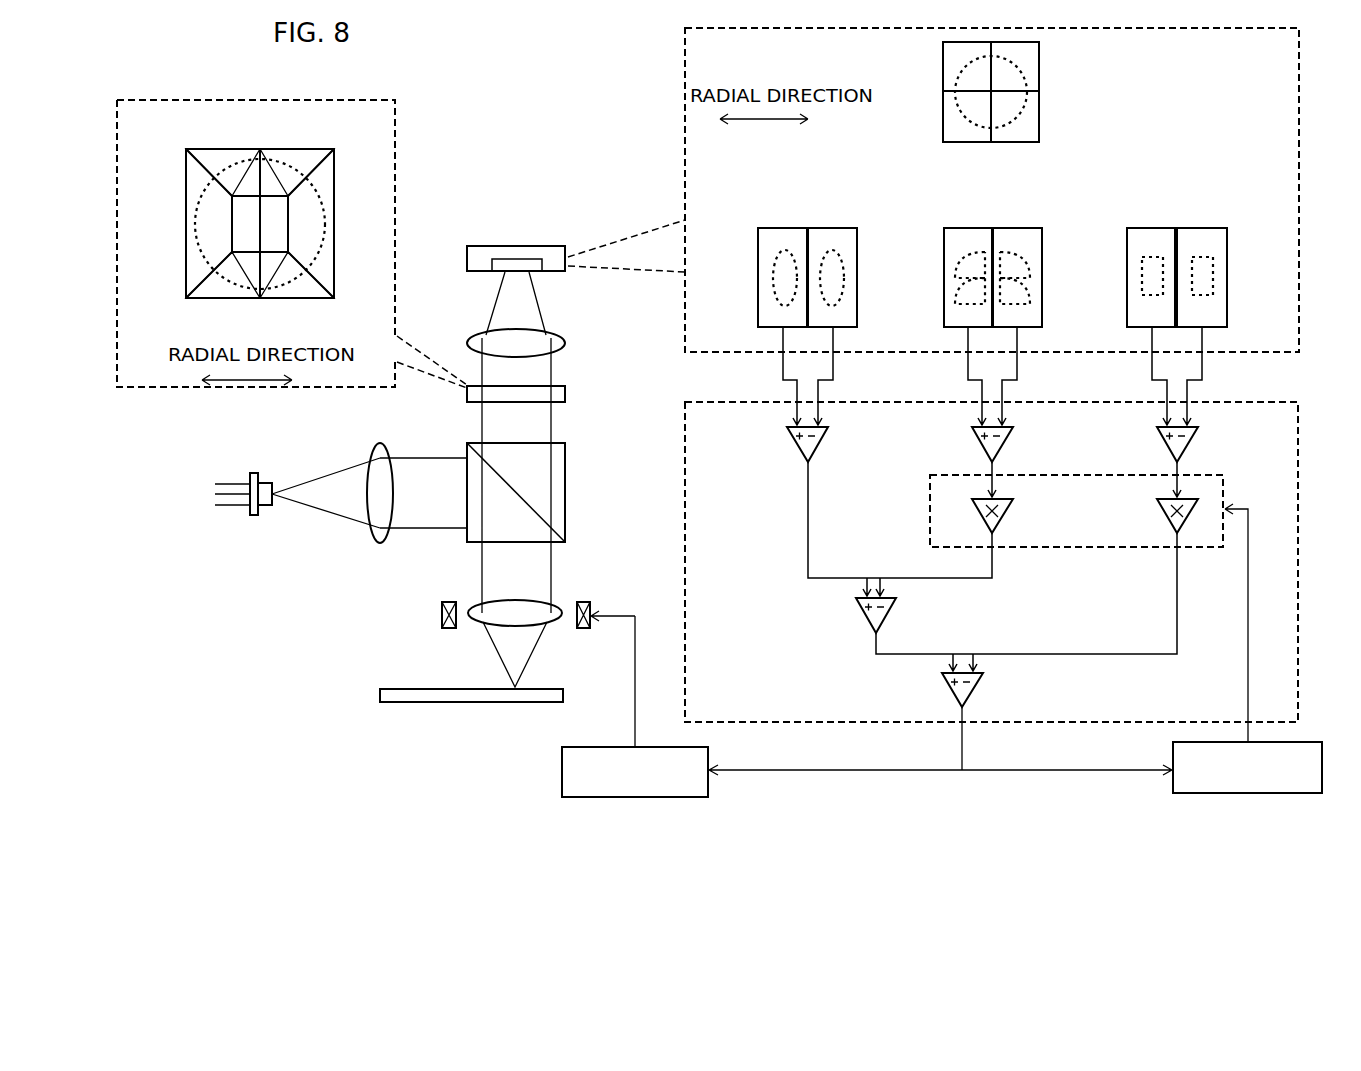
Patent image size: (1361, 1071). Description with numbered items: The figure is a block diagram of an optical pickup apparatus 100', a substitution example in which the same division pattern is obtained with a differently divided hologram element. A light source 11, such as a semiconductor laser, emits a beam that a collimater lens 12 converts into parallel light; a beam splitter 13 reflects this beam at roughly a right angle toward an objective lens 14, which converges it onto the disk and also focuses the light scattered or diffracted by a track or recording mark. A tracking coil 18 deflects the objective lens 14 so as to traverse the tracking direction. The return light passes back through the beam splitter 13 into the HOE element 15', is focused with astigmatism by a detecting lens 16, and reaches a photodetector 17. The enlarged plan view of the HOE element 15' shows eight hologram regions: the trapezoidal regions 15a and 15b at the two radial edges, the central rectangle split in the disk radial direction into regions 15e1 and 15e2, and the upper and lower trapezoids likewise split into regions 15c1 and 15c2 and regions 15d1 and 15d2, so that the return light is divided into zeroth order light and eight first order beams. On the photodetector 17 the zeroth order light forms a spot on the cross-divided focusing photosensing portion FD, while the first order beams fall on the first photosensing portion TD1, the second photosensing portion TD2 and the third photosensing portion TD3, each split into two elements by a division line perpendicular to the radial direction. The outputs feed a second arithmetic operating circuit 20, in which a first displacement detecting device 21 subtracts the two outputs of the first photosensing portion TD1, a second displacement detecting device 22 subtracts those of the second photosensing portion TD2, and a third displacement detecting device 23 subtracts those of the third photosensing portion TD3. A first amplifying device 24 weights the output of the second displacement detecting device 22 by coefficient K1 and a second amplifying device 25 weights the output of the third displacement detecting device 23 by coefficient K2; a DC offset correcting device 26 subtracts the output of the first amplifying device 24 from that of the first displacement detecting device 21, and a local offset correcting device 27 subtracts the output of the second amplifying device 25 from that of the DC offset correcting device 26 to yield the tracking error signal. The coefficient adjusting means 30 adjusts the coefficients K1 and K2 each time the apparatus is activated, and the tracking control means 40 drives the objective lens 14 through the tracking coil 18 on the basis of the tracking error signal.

The light source 11 is at (250, 473).
The collimater lens 12 is at (377, 454).
The beam splitter 13 is at (561, 488).
The objective lens 14 is at (560, 612).
The HOE element 15' is at (551, 373).
The detecting lens 16 is at (477, 346).
The photodetector 17 is at (482, 251).
The tracking coil 18 is at (442, 603).
The second arithmetic operating circuit 20 is at (1287, 397).
The first displacement detecting device 21 is at (821, 440).
The second displacement detecting device 22 is at (1009, 438).
The third displacement detecting device 23 is at (1194, 438).
The first amplifying device 24 is at (1009, 510).
The second amplifying device 25 is at (1162, 508).
The DC offset correcting device 26 is at (892, 607).
The local offset correcting device 27 is at (977, 685).
The coefficient adjusting means 30 is at (1298, 742).
The tracking control means 40 is at (611, 747).
The optical pickup apparatus 100' is at (440, 424).
The trapezoidal region 15a is at (192, 182).
The trapezoidal region 15b is at (324, 182).
The region 15c1 is at (207, 155).
The region 15c2 is at (310, 155).
The region 15d1 is at (203, 292).
The region 15d2 is at (317, 292).
The region 15e1 is at (210, 247).
The region 15e2 is at (315, 247).
The first photosensing portion TD1 is at (805, 312).
The second photosensing portion TD2 is at (995, 312).
The third photosensing portion TD3 is at (1179, 312).
The focusing photosensing portion FD is at (1119, 74).
The weight coefficient K1 is at (1013, 535).
The weight coefficient K2 is at (1198, 535).